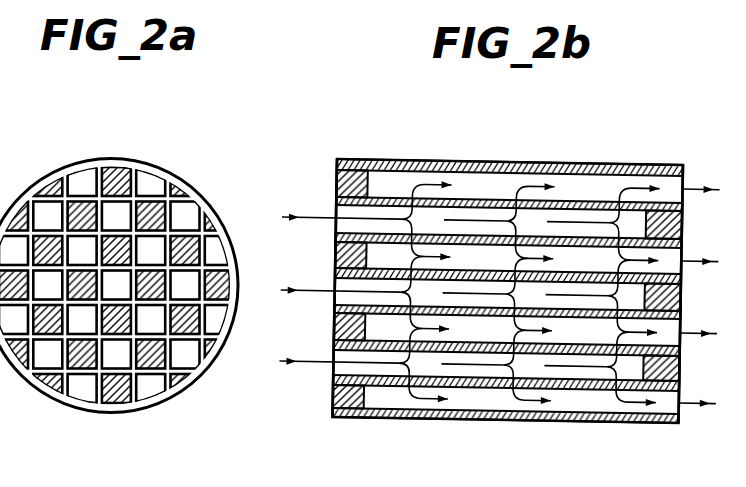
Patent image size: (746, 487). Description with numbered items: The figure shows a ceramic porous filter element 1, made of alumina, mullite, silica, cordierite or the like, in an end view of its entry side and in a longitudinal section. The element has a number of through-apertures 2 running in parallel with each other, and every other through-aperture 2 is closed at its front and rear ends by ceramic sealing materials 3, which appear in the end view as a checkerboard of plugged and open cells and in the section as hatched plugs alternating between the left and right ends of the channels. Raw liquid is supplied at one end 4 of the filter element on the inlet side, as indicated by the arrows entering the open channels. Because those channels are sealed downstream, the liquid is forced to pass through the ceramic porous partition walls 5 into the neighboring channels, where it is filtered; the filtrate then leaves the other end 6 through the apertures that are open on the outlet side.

In FIG. 2b, the ceramic porous filter element 1 is at (395, 149).
In FIG. 2a, the through-apertures 2 is at (187, 217).
In FIG. 2b, the through-apertures 2 is at (572, 391).
In FIG. 2a, the ceramic sealing materials 3 is at (80, 367).
In FIG. 2b, the ceramic sealing materials 3 is at (356, 395).
In FIG. 2a, the one end of the filter element on an inlet side 4 is at (147, 416).
In FIG. 2b, the one end of the filter element on an inlet side 4 is at (326, 401).
In FIG. 2a, the ceramic porous partition walls 5 is at (80, 200).
In FIG. 2b, the ceramic porous partition walls 5 is at (572, 159).
In FIG. 2b, the other end 6 is at (692, 403).